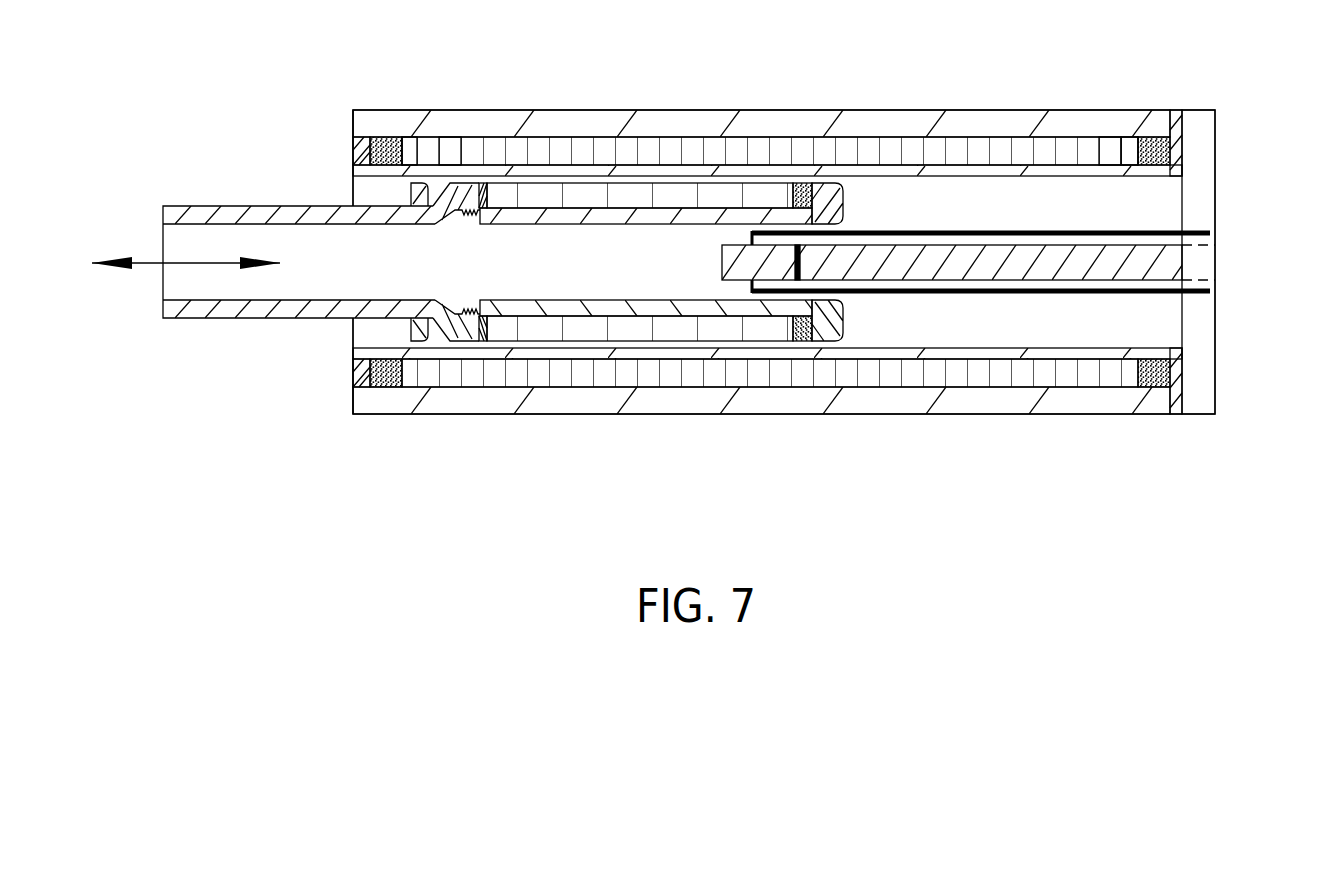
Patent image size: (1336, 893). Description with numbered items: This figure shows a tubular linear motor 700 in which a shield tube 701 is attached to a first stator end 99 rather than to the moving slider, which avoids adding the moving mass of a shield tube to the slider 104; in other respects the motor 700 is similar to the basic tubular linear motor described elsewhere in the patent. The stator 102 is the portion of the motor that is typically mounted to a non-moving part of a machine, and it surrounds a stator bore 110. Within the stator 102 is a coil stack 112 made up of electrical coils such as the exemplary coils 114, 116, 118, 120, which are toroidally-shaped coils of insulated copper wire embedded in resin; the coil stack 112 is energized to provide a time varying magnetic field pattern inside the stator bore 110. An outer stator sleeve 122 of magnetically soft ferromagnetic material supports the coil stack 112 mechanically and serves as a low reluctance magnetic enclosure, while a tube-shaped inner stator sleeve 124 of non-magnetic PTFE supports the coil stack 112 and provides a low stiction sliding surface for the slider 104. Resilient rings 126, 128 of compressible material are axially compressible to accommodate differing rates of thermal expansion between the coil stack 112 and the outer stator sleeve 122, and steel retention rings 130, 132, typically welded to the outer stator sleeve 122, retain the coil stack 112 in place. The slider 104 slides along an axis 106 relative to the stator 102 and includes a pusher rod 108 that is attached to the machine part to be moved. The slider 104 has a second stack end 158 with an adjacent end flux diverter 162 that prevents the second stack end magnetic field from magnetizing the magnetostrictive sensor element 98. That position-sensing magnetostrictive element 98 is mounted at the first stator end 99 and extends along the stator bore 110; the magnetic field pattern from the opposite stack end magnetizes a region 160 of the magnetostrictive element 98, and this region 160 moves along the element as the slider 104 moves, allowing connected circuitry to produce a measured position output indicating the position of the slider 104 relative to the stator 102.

The motor 700 is at (262, 46).
The stator 102 is at (300, 133).
The axis 106 is at (113, 260).
The pusher rod 108 is at (250, 318).
The stator bore 110 is at (947, 216).
The coil stack 112 is at (587, 100).
The coil 114 is at (416, 100).
The coil 116 is at (453, 100).
The coil 118 is at (1100, 100).
The coil 120 is at (1130, 100).
The outer stator sleeve 122 is at (790, 110).
The inner stator sleeve 124 is at (1025, 170).
The resilient ring 126 is at (1178, 155).
The resilient ring 128 is at (353, 140).
The retention ring 130 is at (353, 376).
The retention ring 132 is at (1180, 414).
The slider 104 is at (675, 262).
The second stack end 158 is at (487, 197).
The region 160 is at (793, 256).
The end flux diverter 162 is at (480, 340).
The magnetostrictive sensor element 98 is at (1020, 283).
The first stator end 99 is at (1218, 283).
The shield tube 701 is at (1148, 295).